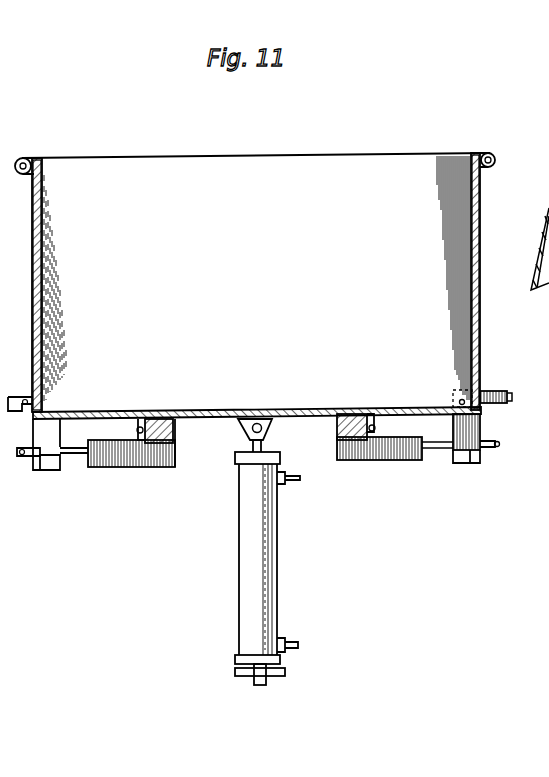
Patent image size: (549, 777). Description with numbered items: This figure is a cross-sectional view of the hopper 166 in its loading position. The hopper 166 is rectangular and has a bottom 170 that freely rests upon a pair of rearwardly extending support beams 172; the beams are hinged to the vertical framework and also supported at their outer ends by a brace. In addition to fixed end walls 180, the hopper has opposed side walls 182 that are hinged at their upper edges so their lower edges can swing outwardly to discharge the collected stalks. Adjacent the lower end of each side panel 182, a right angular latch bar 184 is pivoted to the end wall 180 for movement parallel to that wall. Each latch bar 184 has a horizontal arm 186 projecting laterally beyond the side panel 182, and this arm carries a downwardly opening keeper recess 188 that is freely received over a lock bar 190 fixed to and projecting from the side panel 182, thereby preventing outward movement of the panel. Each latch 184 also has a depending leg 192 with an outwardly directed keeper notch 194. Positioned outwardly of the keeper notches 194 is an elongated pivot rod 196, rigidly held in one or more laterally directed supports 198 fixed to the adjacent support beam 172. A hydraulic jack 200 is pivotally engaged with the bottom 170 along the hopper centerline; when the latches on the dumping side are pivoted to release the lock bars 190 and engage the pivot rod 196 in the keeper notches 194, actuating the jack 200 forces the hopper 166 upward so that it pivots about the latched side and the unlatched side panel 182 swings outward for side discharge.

The hopper 166 is at (222, 152).
The end wall 180 is at (380, 172).
The side wall 182 is at (40, 318).
The latch bar 184 is at (437, 423).
The bottom 170 is at (215, 412).
The support beam 172 is at (163, 445).
The hydraulic jack 200 is at (265, 583).
The laterally directed support 198 is at (412, 449).
The depending leg 192 is at (462, 436).
The keeper notch 194 is at (487, 450).
The pivot rod 196 is at (500, 443).
The horizontal arm 186 is at (486, 392).
The keeper recess 188 is at (488, 401).
The lock bar 190 is at (507, 392).